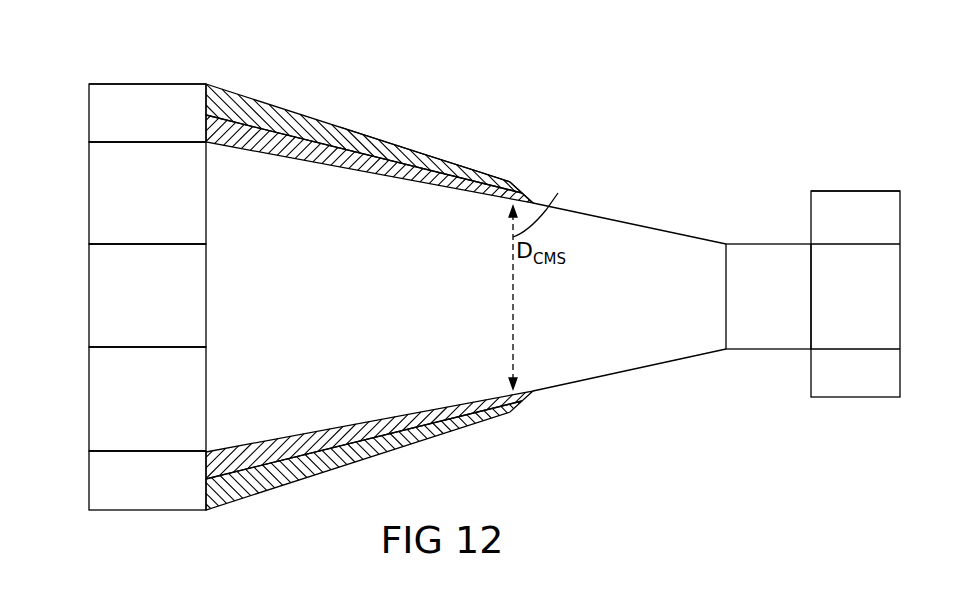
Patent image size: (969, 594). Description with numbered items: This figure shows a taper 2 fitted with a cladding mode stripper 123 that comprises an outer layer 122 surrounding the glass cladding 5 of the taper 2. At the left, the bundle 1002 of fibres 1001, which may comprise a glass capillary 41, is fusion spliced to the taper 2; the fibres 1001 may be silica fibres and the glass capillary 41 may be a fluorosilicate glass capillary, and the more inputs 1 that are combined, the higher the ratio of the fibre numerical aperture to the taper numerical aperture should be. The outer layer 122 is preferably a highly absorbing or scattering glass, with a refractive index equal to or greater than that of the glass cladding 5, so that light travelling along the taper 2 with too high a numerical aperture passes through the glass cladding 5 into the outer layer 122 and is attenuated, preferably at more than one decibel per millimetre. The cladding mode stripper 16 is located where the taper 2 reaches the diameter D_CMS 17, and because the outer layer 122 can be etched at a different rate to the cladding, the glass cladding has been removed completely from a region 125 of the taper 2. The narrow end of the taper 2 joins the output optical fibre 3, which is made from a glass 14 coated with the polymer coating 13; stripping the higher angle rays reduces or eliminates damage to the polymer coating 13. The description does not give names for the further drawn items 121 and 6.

The bundle of fibres 1002 is at (122, 83).
The glass capillary 41 is at (162, 83).
The inputs 1 is at (88, 165).
The fibres 1001 is at (88, 210).
The first layer 121 is at (267, 124).
The glass cladding 5 is at (320, 140).
The outer layer 122 is at (377, 136).
The cladding mode stripper 16 is at (440, 158).
The cladding mode stripper 123 is at (488, 172).
The diameter D_CMS 17 is at (548, 203).
The region of the taper 125 is at (602, 216).
The glass 14 is at (762, 242).
The output optical fibre 3 is at (838, 190).
The polymer coating 13 is at (865, 190).
The inner channel 6 is at (585, 358).
The taper 2 is at (270, 492).